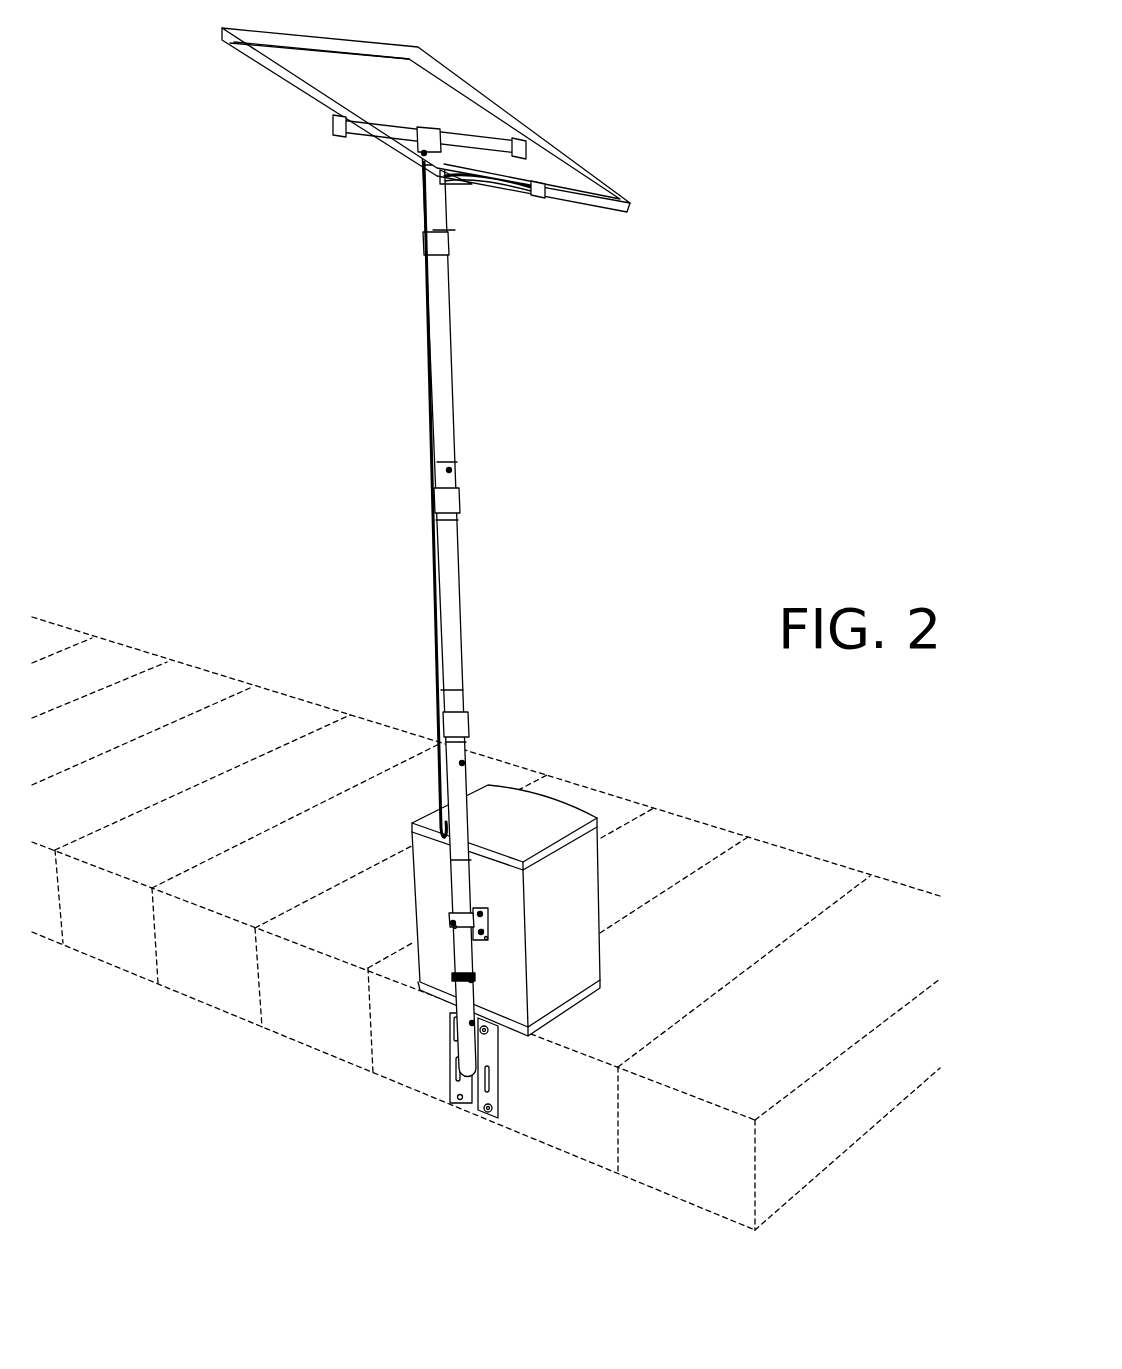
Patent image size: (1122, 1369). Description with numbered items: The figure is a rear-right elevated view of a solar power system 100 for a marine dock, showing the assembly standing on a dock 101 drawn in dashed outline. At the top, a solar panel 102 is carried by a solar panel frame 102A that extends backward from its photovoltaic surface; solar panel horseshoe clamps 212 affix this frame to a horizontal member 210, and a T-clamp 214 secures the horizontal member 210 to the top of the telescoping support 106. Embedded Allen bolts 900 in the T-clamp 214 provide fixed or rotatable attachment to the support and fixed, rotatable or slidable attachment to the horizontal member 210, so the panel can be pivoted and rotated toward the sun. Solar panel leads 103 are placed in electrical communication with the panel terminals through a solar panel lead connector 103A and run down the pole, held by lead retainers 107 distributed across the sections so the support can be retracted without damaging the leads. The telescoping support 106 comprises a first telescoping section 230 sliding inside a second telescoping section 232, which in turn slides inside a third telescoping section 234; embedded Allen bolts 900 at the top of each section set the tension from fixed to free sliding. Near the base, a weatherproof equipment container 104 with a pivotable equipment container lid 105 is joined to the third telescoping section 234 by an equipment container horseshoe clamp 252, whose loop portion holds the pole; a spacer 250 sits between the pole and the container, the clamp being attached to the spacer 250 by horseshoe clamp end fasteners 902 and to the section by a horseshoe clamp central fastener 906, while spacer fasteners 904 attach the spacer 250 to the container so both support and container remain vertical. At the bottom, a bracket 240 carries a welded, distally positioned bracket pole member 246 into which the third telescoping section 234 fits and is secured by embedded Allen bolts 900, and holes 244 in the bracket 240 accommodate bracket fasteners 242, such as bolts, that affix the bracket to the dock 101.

The solar power system 100 is at (461, 166).
The dock 101 is at (105, 668).
The solar panel 102 is at (548, 176).
The solar panel frame 102A is at (257, 53).
The solar panel leads 103 is at (438, 637).
The solar panel lead connector 103A is at (537, 198).
The equipment container 104 is at (452, 930).
The equipment container lid 105 is at (535, 822).
The telescoping support 106 is at (447, 417).
The lead retainers 107 is at (433, 243).
The horizontal member 210 is at (387, 128).
The solar panel horseshoe clamps 212 is at (335, 122).
The T-clamp 214 is at (421, 158).
The first telescoping section 230 is at (437, 343).
The second telescoping section 232 is at (456, 617).
The third telescoping section 234 is at (457, 787).
The bracket 240 is at (470, 1095).
The bracket fasteners 242 is at (498, 1100).
The holes 244 is at (489, 1094).
The bracket pole member 246 is at (458, 1068).
The spacer 250 is at (486, 938).
The equipment container horseshoe clamp 252 is at (458, 922).
The embedded Allen bolts 900 is at (424, 153).
The horseshoe clamp end fasteners 902 is at (480, 912).
The spacer fasteners 904 is at (486, 928).
The horseshoe clamp central fastener 906 is at (455, 927).